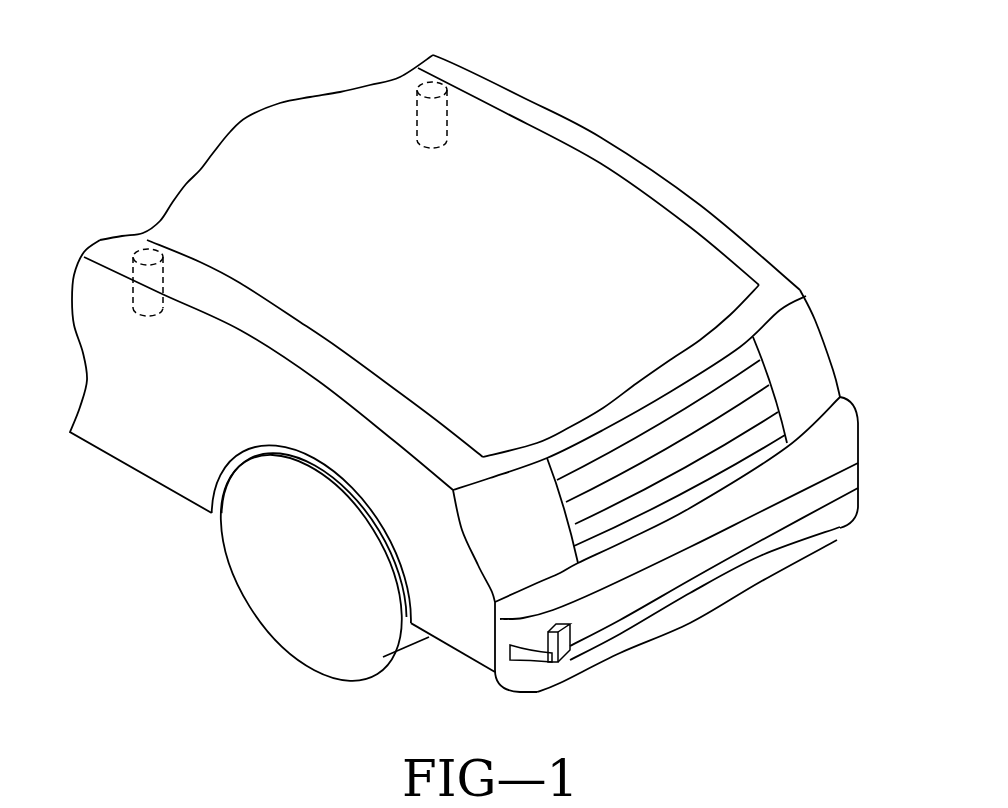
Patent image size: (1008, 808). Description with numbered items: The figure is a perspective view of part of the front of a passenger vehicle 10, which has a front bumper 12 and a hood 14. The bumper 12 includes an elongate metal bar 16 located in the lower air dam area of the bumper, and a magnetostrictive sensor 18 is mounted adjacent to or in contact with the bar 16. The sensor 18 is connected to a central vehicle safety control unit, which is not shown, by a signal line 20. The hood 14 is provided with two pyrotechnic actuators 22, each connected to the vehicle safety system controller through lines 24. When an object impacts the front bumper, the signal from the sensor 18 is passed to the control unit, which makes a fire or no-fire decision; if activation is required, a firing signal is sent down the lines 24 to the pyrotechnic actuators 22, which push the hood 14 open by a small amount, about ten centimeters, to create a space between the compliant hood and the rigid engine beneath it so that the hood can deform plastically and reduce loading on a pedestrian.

The passenger vehicle 10 is at (703, 147).
The front bumper 12 is at (847, 417).
The hood 14 is at (682, 260).
The elongate metal bar 16 is at (797, 520).
The magnetostrictive sensor 18 is at (570, 650).
The signal line 20 is at (474, 584).
The pyrotechnic actuators 22 is at (433, 92).
The lines 24 is at (433, 147).